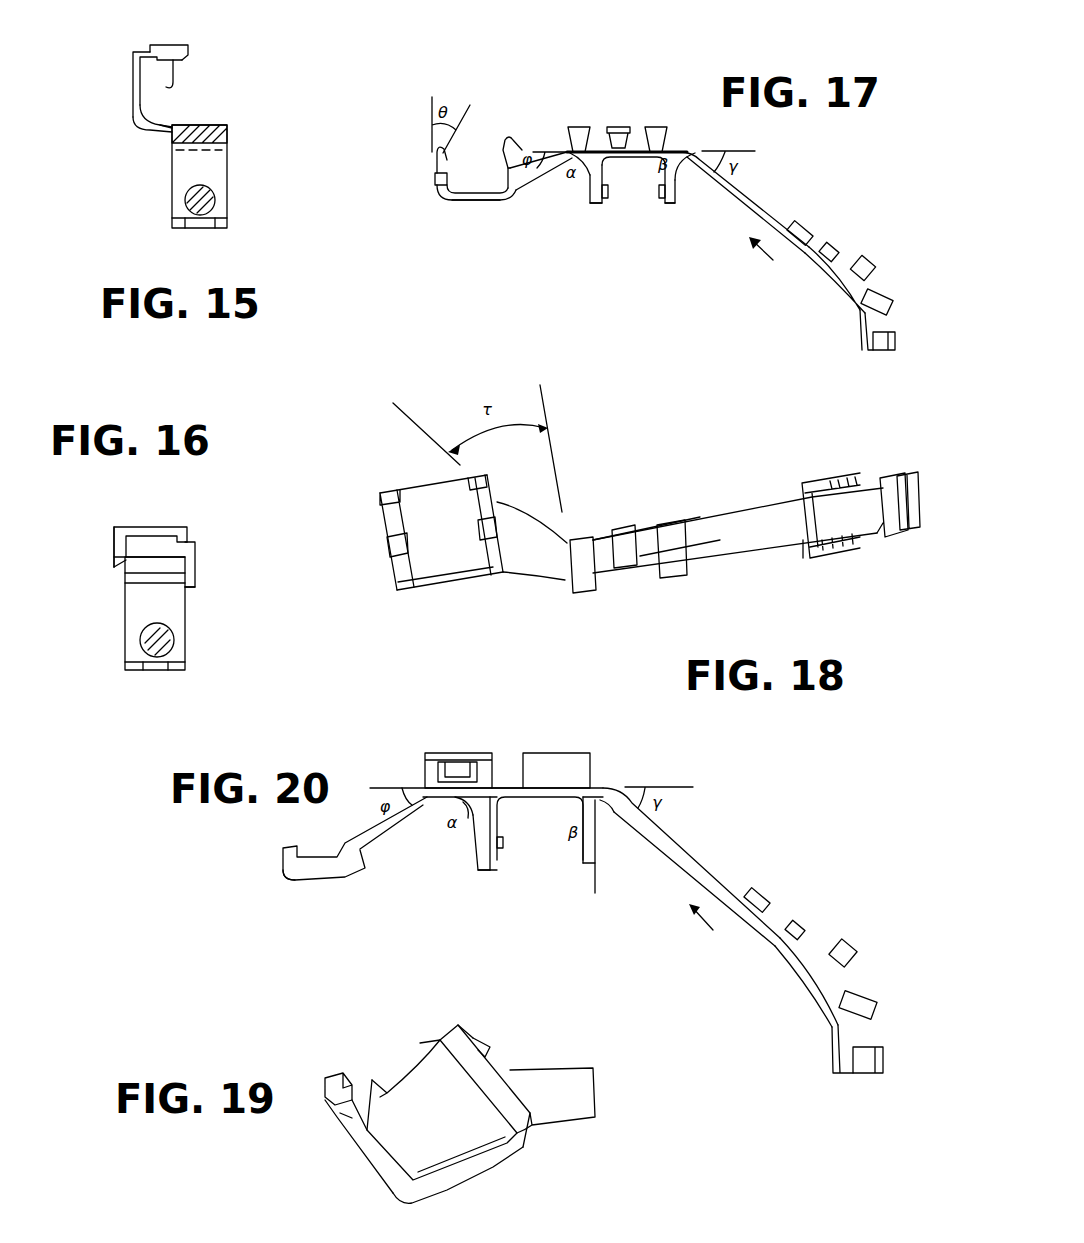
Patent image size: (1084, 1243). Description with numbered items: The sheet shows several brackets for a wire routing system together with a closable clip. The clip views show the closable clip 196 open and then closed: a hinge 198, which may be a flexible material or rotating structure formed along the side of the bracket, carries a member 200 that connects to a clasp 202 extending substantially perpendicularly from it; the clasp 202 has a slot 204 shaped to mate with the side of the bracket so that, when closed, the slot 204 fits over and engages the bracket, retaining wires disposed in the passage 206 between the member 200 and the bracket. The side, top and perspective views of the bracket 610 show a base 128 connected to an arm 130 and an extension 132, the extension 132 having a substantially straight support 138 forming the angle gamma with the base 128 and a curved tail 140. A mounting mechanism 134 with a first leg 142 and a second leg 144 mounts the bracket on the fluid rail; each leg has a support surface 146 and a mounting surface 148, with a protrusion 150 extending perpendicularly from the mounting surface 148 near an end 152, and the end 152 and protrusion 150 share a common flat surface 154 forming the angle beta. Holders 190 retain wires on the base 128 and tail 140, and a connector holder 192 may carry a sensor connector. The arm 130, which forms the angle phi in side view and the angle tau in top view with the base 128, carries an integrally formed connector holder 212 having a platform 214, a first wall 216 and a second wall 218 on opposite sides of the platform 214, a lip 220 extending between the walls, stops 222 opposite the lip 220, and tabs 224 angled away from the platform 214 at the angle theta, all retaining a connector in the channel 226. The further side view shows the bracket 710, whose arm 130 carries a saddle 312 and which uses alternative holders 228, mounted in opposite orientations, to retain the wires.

In FIG. 15, the base 128 is at (233, 133).
In FIG. 17, the base 128 is at (610, 126).
In FIG. 18, the base 128 is at (648, 562).
In FIG. 20, the base 128 is at (507, 786).
In FIG. 17, the arm 130 is at (532, 178).
In FIG. 18, the arm 130 is at (545, 570).
In FIG. 20, the arm 130 is at (370, 848).
In FIG. 19, the arm 130 is at (555, 1107).
In FIG. 17, the extension 132 is at (834, 263).
In FIG. 18, the extension 132 is at (797, 547).
In FIG. 20, the extension 132 is at (800, 953).
In FIG. 17, the mounting mechanism 134 is at (777, 261).
In FIG. 20, the mounting mechanism 134 is at (713, 928).
In FIG. 17, the support 138 is at (746, 197).
In FIG. 18, the support 138 is at (767, 523).
In FIG. 20, the support 138 is at (673, 833).
In FIG. 17, the tail 140 is at (853, 300).
In FIG. 18, the tail 140 is at (875, 525).
In FIG. 20, the tail 140 is at (850, 990).
In FIG. 15, the first leg 142 is at (227, 170).
In FIG. 16, the first leg 142 is at (187, 635).
In FIG. 17, the first leg 142 is at (593, 205).
In FIG. 20, the first leg 142 is at (483, 862).
In FIG. 17, the second leg 144 is at (678, 205).
In FIG. 20, the second leg 144 is at (597, 893).
In FIG. 17, the support surface 146 is at (589, 180).
In FIG. 20, the support surface 146 is at (477, 843).
In FIG. 15, the mounting surface 148 is at (185, 177).
In FIG. 16, the mounting surface 148 is at (150, 600).
In FIG. 17, the mounting surface 148 is at (610, 160).
In FIG. 20, the mounting surface 148 is at (564, 841).
In FIG. 15, the protrusion 150 is at (190, 205).
In FIG. 16, the protrusion 150 is at (150, 642).
In FIG. 17, the protrusion 150 is at (663, 200).
In FIG. 20, the protrusion 150 is at (503, 848).
In FIG. 15, the end 152 is at (215, 228).
In FIG. 16, the end 152 is at (168, 672).
In FIG. 20, the end 152 is at (487, 873).
In FIG. 15, the common flat surface 154 is at (180, 226).
In FIG. 16, the common flat surface 154 is at (150, 670).
In FIG. 17, the common flat surface 154 is at (599, 205).
In FIG. 20, the common flat surface 154 is at (500, 865).
In FIG. 17, the alternative holder 190 is at (575, 127).
In FIG. 18, the alternative holder 190 is at (623, 530).
In FIG. 20, the alternative holder 190 is at (850, 947).
In FIG. 17, the connector holder 192 is at (815, 232).
In FIG. 18, the connector holder 192 is at (835, 505).
In FIG. 20, the connector holder 192 is at (770, 907).
In FIG. 15, the closable clip 196 is at (137, 118).
In FIG. 16, the closable clip 196 is at (116, 527).
In FIG. 15, the hinge 198 is at (170, 134).
In FIG. 16, the hinge 198 is at (116, 562).
In FIG. 15, the member 200 is at (133, 77).
In FIG. 16, the member 200 is at (135, 527).
In FIG. 15, the clasp 202 is at (146, 45).
In FIG. 16, the clasp 202 is at (195, 548).
In FIG. 15, the slot 204 is at (170, 88).
In FIG. 16, the slot 204 is at (197, 577).
In FIG. 16, the passage 206 is at (160, 540).
In FIG. 17, the connector holder 212 is at (443, 200).
In FIG. 18, the connector holder 212 is at (400, 592).
In FIG. 19, the connector holder 212 is at (512, 1160).
In FIG. 17, the platform 214 is at (473, 200).
In FIG. 18, the platform 214 is at (423, 497).
In FIG. 17, the first wall 216 is at (507, 163).
In FIG. 18, the first wall 216 is at (485, 480).
In FIG. 19, the first wall 216 is at (458, 1025).
In FIG. 17, the second wall 218 is at (435, 180).
In FIG. 18, the second wall 218 is at (383, 520).
In FIG. 19, the second wall 218 is at (380, 1167).
In FIG. 18, the lip 220 is at (437, 590).
In FIG. 19, the lip 220 is at (455, 1178).
In FIG. 19, the stop 222 is at (420, 1043).
In FIG. 17, the tab 224 is at (508, 137).
In FIG. 18, the tab 224 is at (498, 500).
In FIG. 19, the tab 224 is at (493, 1055).
In FIG. 19, the channel 226 is at (405, 1129).
In FIG. 20, the alternative holder 228 is at (455, 765).
In FIG. 20, the saddle 312 is at (290, 878).
In FIG. 17, the bracket 610 is at (604, 332).
In FIG. 18, the bracket 610 is at (610, 449).
In FIG. 20, the bracket 710 is at (649, 982).